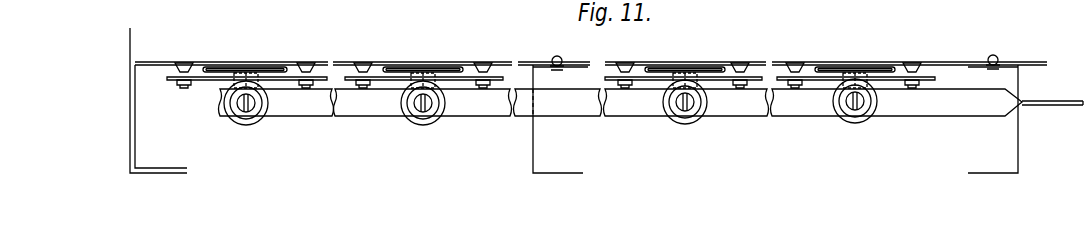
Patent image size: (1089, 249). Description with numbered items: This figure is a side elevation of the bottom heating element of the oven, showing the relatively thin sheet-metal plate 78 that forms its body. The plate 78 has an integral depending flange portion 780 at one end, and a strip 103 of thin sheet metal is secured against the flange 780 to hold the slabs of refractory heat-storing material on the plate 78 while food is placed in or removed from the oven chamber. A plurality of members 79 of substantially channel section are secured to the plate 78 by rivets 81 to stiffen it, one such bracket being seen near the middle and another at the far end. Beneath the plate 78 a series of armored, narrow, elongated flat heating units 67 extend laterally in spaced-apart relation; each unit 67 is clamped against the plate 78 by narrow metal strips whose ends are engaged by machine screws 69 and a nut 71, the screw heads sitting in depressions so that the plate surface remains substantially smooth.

The strip of thin sheet metal 103 is at (131, 42).
The depending flange portion 780 is at (137, 118).
The sheet-metal plate 78 is at (225, 63).
The channel-section member 79 is at (538, 137).
The rivet 81 is at (556, 61).
The machine screw 69 is at (628, 73).
The heating unit 67 is at (263, 70).
The nut 71 is at (637, 82).